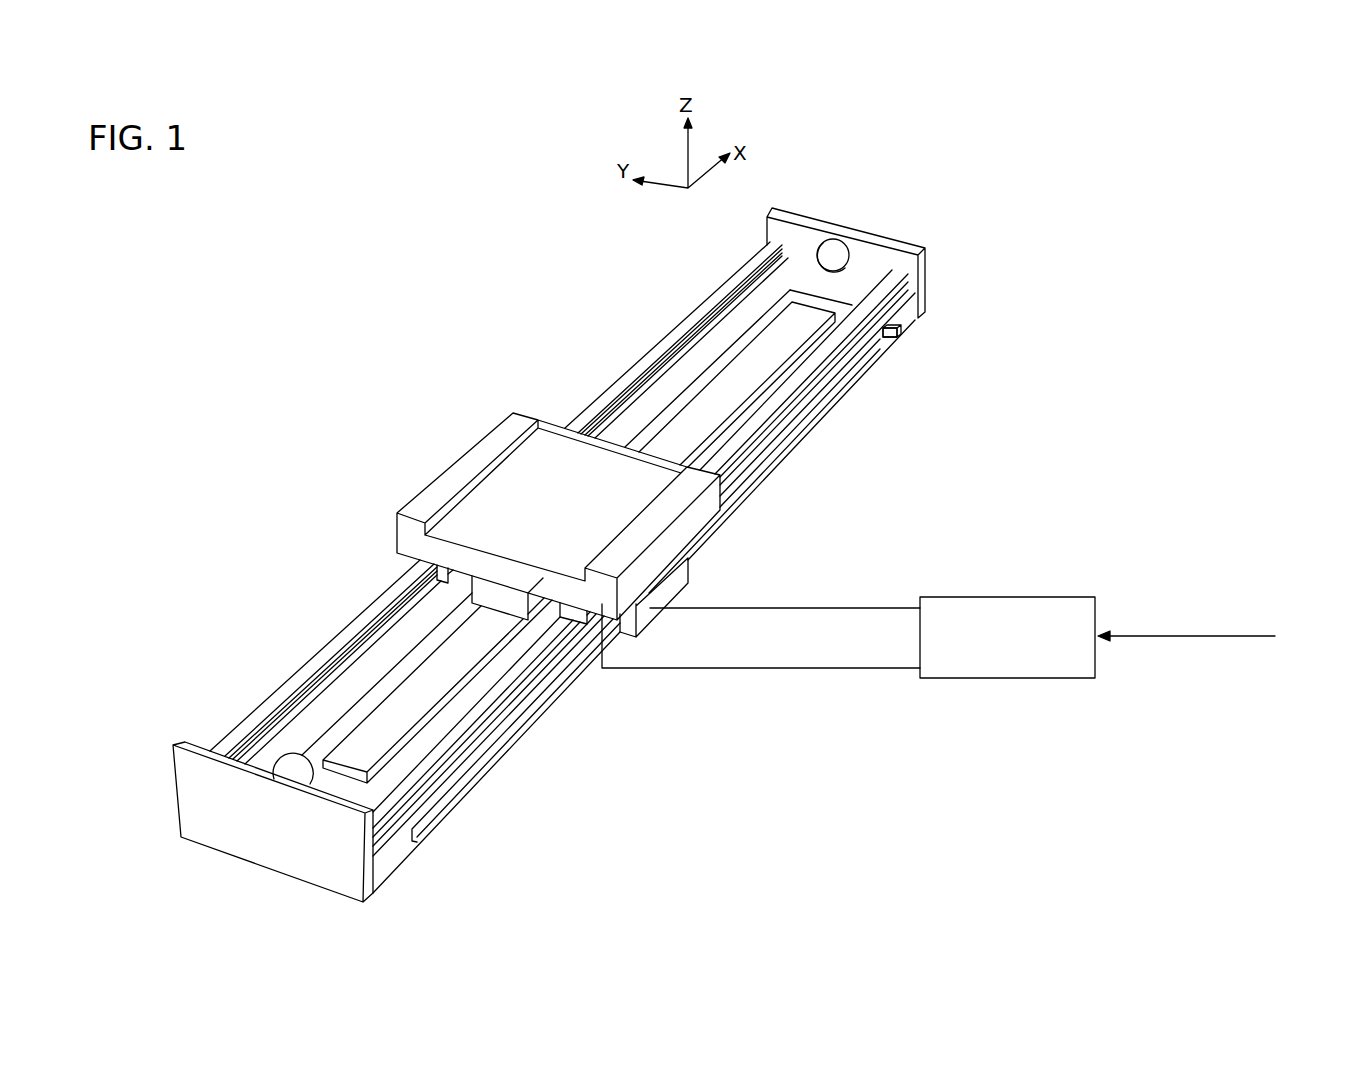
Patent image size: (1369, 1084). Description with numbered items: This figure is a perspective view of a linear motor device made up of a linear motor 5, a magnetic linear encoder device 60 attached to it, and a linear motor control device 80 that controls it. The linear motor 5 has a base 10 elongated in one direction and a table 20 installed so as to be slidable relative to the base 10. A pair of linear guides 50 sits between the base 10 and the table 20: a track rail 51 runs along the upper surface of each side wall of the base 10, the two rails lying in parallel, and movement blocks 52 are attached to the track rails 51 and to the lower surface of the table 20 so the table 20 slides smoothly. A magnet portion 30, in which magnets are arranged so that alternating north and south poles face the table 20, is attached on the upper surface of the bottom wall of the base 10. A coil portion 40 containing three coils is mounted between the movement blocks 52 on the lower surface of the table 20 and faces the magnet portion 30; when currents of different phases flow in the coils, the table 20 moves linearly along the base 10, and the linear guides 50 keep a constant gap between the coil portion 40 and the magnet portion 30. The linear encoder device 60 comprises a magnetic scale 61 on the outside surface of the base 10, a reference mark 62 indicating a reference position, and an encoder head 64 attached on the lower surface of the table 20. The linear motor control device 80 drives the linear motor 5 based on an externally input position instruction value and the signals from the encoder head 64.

The linear motor 5 is at (583, 282).
The base 10 is at (725, 345).
The table 20 is at (503, 430).
The magnet portion 30 is at (408, 713).
The coil portion 40 is at (490, 600).
The linear guide 50 is at (280, 527).
The track rail 51 is at (385, 615).
The movement block 52 is at (425, 566).
The linear encoder device 60 is at (948, 362).
The magnetic scale 61 is at (752, 487).
The reference mark 62 is at (890, 338).
The encoder head 64 is at (680, 572).
The linear motor control device 80 is at (1048, 597).